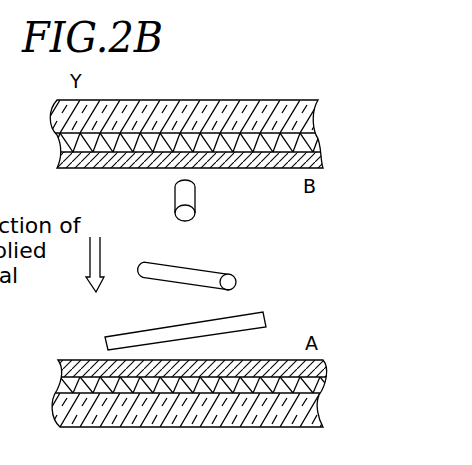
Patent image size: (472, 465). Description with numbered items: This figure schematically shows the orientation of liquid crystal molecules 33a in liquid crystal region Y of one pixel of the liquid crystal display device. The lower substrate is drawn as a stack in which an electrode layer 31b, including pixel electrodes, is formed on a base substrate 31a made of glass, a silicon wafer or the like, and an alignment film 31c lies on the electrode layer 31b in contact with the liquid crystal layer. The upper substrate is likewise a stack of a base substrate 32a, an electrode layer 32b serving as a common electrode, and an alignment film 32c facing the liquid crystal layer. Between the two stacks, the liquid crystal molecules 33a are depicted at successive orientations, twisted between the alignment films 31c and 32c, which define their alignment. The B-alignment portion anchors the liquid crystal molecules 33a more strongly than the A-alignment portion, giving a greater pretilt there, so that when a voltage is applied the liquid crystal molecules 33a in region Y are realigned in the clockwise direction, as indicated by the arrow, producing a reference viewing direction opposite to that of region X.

The base substrate 31a is at (313, 408).
The electrode layer 31b is at (318, 383).
The alignment film 31c is at (323, 367).
The base substrate 32a is at (314, 113).
The electrode layer 32b is at (316, 143).
The alignment film 32c is at (319, 162).
The liquid crystal molecules 33a is at (195, 202).